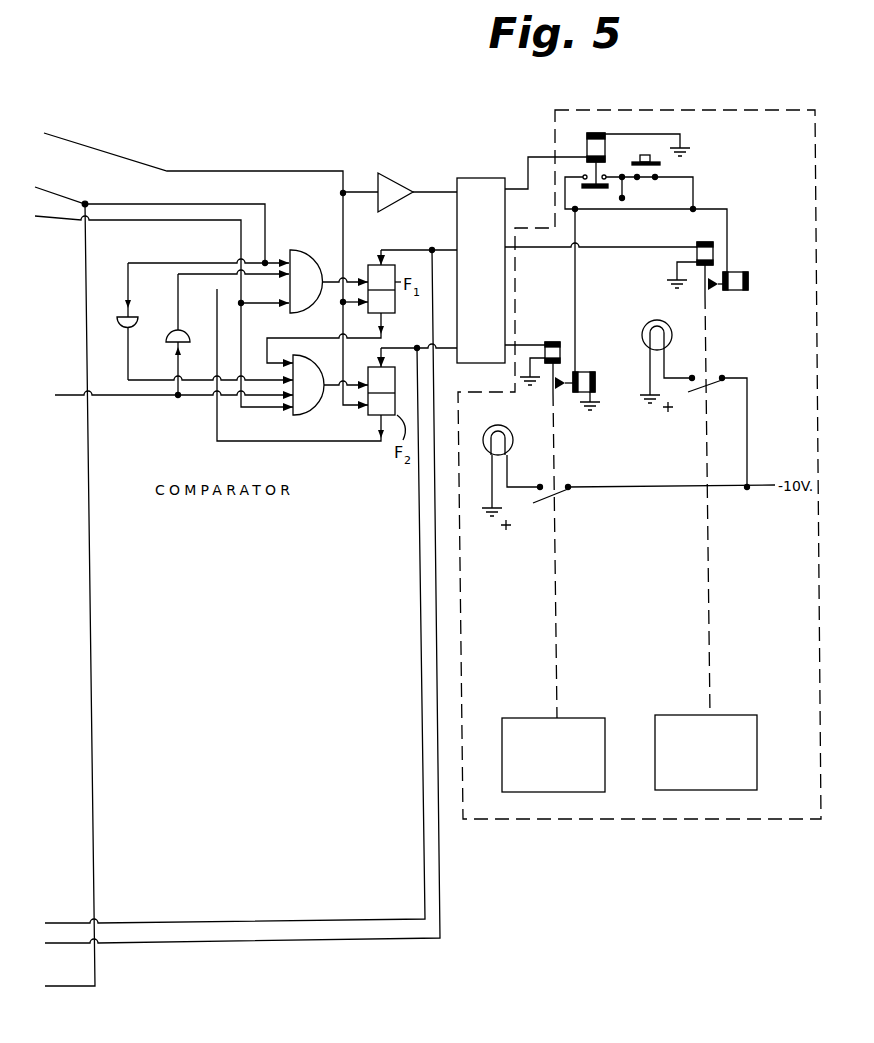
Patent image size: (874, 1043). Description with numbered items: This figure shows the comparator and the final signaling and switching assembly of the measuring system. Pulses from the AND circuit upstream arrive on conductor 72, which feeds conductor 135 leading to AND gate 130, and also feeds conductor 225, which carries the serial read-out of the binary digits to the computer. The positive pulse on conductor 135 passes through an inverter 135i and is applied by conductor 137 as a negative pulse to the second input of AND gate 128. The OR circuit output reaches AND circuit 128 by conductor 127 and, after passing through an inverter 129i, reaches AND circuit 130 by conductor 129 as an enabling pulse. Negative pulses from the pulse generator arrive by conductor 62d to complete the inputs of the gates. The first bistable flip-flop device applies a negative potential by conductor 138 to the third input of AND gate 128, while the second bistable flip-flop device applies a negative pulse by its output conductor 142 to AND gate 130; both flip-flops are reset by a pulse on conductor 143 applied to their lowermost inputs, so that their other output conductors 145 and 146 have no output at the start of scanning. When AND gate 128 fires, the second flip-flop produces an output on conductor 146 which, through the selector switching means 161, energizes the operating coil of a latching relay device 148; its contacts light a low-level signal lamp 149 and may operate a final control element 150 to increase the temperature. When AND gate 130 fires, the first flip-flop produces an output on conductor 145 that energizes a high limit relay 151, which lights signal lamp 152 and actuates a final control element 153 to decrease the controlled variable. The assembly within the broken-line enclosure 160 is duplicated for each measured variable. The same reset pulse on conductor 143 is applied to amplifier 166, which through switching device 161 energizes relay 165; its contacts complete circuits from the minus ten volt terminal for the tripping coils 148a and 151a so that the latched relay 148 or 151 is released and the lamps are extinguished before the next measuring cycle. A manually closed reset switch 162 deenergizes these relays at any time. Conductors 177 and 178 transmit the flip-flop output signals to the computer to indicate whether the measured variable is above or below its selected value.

The conductor 143 is at (137, 160).
The conductor 72 is at (66, 203).
The conductor 62d is at (101, 222).
The conductor 135 is at (153, 250).
The inverter 135i is at (125, 314).
The conductor 129 is at (178, 310).
The inverter 129i is at (167, 340).
The conductor 137 is at (128, 370).
The conductor 127 is at (115, 400).
The AND circuit 130 is at (306, 264).
The conductor 138 is at (328, 337).
The AND circuit 128 is at (310, 411).
The output conductor 142 is at (289, 442).
The output conductor 145 is at (396, 250).
The output conductor 146 is at (395, 348).
The amplifier 166 is at (388, 180).
The selector switching means 161 is at (470, 183).
The relay 165 is at (603, 135).
The reset switch 162 is at (662, 171).
The high limit relay 151 is at (697, 243).
The tripping coil 151a is at (735, 272).
The relay device 148 is at (561, 313).
The tripping coil 148a is at (589, 372).
The signal lamp 152 is at (642, 341).
The signal lamp 149 is at (510, 432).
The final control element 150 is at (532, 718).
The final control element 153 is at (734, 715).
The broken-line enclosure 160 is at (715, 820).
The conductor 225 is at (93, 602).
The conductor 178 is at (196, 898).
The conductor 177 is at (203, 943).